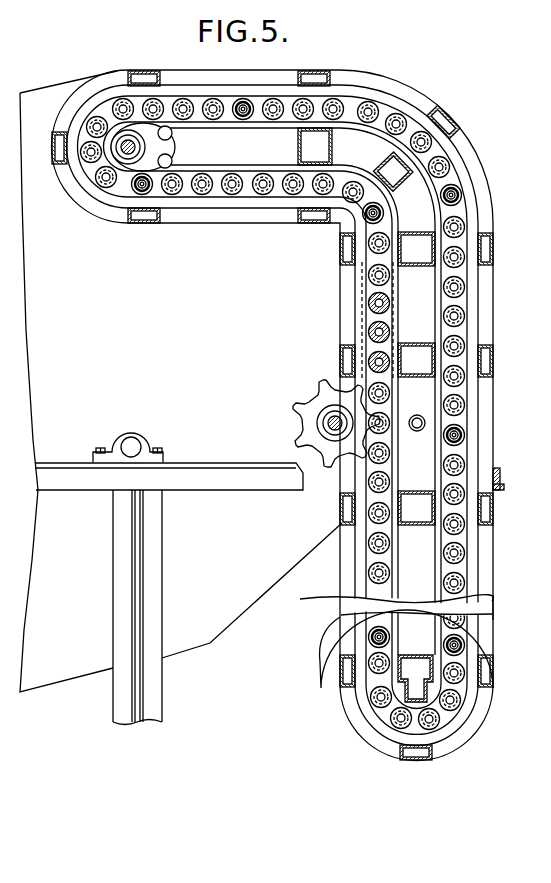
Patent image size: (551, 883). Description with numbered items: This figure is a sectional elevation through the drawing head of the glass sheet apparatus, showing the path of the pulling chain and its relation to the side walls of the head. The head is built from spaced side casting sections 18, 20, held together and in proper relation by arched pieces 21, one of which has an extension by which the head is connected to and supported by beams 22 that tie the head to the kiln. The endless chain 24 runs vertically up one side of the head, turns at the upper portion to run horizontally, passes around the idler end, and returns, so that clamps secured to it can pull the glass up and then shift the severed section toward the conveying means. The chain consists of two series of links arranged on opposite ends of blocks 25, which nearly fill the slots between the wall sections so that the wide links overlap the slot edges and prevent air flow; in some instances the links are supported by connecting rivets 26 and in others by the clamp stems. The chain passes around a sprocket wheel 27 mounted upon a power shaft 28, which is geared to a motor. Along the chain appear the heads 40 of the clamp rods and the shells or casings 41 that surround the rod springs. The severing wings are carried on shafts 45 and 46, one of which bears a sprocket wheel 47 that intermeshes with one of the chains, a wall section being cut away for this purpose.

The side casting section 18 is at (363, 288).
The side casting section 20 is at (297, 415).
The arched pieces 21 is at (57, 152).
The beams 22 is at (218, 474).
The endless chain 24 is at (200, 101).
The blocks 25 is at (372, 331).
The connecting rivets 26 is at (462, 643).
The sprocket wheel 27 is at (176, 151).
The power shaft 28 is at (127, 140).
The head 40 is at (134, 193).
The shell or casing 41 is at (246, 101).
The shaft 45 is at (326, 425).
The shaft 46 is at (426, 423).
The sprocket wheel 47 is at (308, 412).